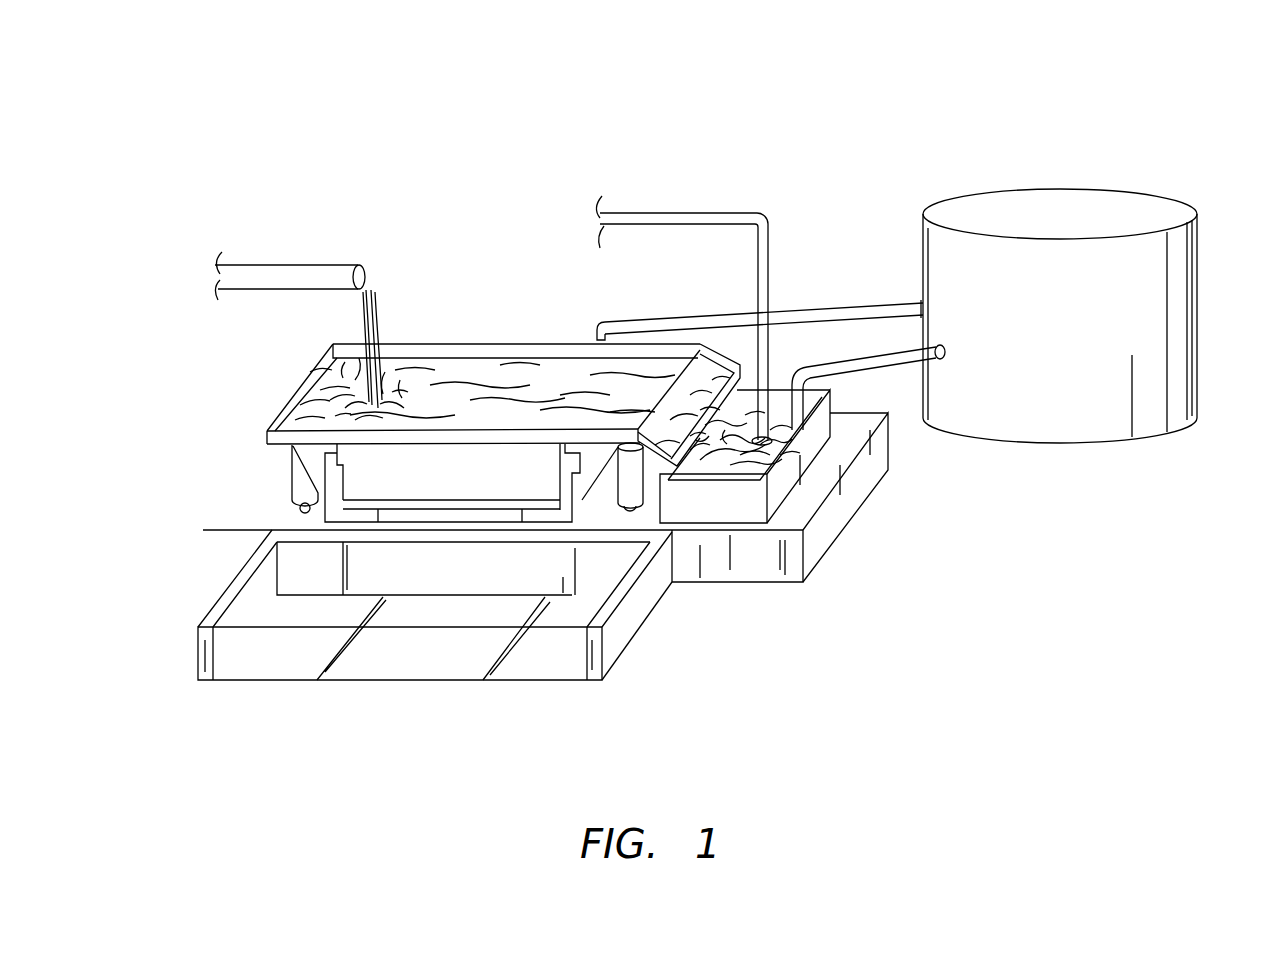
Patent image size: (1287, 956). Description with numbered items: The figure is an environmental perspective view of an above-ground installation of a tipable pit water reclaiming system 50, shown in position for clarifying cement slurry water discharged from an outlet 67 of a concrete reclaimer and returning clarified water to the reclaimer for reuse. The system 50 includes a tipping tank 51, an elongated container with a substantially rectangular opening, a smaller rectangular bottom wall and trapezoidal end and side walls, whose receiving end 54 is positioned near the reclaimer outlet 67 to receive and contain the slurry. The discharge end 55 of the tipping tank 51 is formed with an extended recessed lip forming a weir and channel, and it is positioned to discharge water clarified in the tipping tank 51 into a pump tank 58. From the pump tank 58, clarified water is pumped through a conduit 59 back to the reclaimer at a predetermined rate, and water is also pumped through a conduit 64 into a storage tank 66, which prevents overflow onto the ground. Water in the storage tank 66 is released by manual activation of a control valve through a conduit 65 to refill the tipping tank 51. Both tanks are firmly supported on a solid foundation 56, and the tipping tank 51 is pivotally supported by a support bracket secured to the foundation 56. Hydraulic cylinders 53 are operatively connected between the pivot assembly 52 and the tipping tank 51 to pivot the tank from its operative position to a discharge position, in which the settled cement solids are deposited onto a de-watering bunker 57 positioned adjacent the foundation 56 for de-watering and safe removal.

The tipable pit water reclaiming system 50 is at (431, 137).
The tipping tank 51 is at (470, 350).
The pivot assembly 52 is at (560, 490).
The hydraulic cylinders 53 is at (296, 480).
The receiving end 54 is at (305, 385).
The discharge end 55 is at (713, 357).
The foundation 56 is at (855, 493).
The de-watering bunker 57 is at (252, 572).
The pump tank 58 is at (733, 512).
The conduit 59 is at (640, 212).
The conduit 64 is at (868, 362).
The conduit 65 is at (788, 312).
The storage tank 66 is at (1157, 326).
The outlet 67 is at (292, 268).